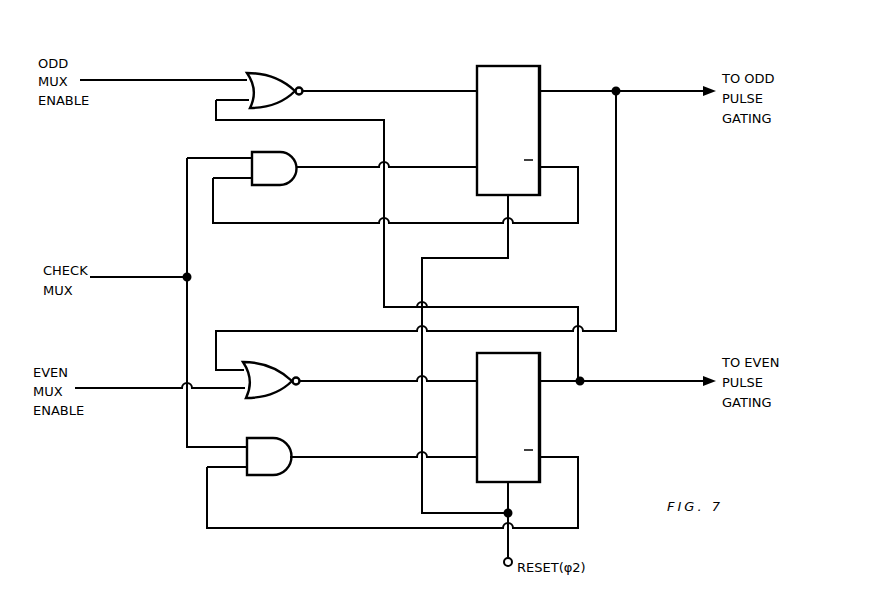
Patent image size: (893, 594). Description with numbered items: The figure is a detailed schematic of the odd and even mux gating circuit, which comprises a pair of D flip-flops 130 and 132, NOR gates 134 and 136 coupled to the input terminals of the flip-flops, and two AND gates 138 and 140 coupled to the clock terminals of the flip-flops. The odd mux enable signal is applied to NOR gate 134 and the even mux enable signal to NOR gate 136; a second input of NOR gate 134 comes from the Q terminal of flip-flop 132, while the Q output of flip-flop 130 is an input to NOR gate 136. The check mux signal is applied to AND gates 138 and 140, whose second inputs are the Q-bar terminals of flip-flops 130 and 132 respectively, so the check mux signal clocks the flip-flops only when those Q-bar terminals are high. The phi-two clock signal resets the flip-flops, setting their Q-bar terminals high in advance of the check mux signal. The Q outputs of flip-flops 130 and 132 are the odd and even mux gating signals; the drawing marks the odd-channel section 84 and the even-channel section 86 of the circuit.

The odd mux enable gating circuit 84 is at (366, 58).
The even mux enable gating circuit 86 is at (305, 540).
The D flip-flop 130 is at (513, 66).
The D flip-flop 132 is at (540, 413).
The NOR gate 134 is at (283, 72).
The NOR gate 136 is at (280, 361).
The AND gate 138 is at (299, 155).
The AND gate 140 is at (289, 440).